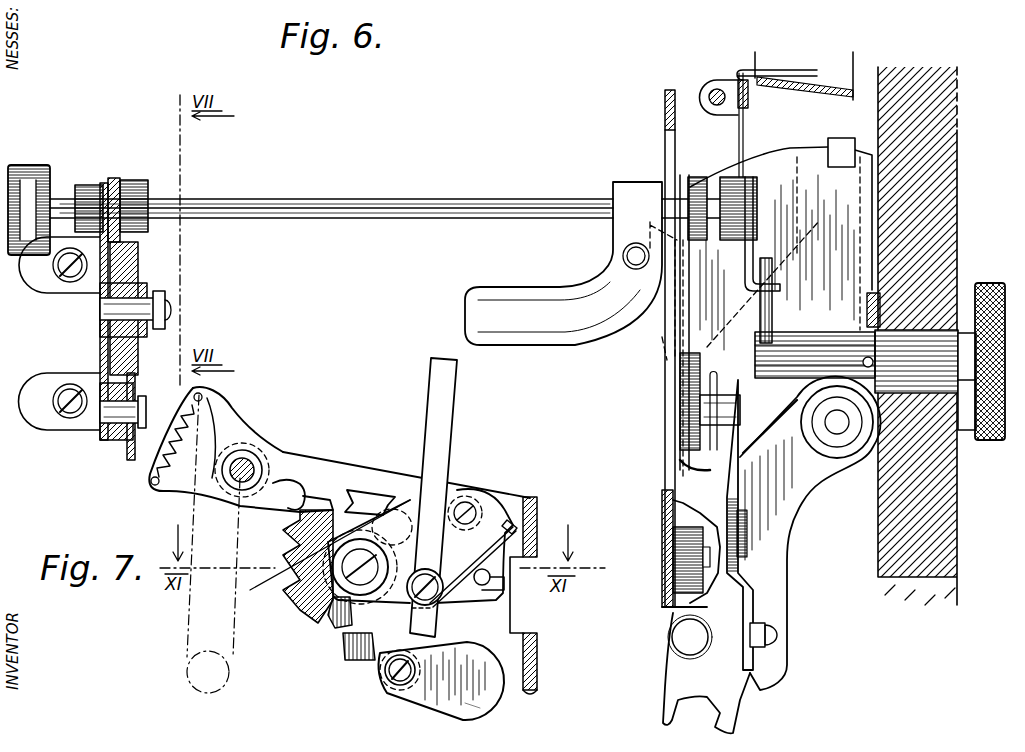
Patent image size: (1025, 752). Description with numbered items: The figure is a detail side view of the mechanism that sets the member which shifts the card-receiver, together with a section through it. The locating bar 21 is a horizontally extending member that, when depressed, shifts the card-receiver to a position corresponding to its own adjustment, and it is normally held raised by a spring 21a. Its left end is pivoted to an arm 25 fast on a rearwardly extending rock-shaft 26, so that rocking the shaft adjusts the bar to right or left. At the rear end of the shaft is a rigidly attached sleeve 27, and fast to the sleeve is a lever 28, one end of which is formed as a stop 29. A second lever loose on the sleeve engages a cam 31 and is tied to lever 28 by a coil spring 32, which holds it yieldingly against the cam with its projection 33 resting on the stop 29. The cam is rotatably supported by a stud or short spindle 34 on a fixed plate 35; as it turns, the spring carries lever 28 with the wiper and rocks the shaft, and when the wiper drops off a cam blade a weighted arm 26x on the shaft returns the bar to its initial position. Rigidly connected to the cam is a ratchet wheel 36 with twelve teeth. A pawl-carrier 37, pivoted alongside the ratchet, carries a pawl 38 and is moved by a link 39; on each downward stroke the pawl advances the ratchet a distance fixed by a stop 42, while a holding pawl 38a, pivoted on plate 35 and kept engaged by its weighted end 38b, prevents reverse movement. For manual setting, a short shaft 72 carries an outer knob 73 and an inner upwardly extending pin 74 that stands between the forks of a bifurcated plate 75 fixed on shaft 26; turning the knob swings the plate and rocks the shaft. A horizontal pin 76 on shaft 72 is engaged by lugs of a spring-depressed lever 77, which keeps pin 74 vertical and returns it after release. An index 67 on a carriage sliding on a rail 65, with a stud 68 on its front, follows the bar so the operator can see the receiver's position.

In FIG. 6, the weighted arm 26x is at (37, 168).
In FIG. 6, the rock-shaft 26 is at (400, 199).
In FIG. 6, the lever 28 is at (109, 180).
In FIG. 7, the lever 28 is at (245, 428).
In FIG. 6, the sleeve 27 is at (143, 186).
In FIG. 6, the ratchet wheel 36 is at (140, 263).
In FIG. 7, the ratchet wheel 36 is at (332, 628).
In FIG. 6, the stud or short spindle 34 is at (167, 309).
In FIG. 6, the fixed plate 35 is at (100, 321).
In FIG. 7, the fixed plate 35 is at (372, 482).
In FIG. 6, the arm 25 is at (690, 313).
In FIG. 7, the arm 25 is at (192, 613).
In FIG. 6, the locating bar 21 is at (700, 411).
In FIG. 6, the spring 21a is at (742, 429).
In FIG. 6, the lever 77 is at (865, 305).
In FIG. 6, the horizontally extending pin 76 is at (870, 318).
In FIG. 6, the bifurcated plate 75 is at (781, 288).
In FIG. 6, the upwardly extending pin 74 is at (773, 316).
In FIG. 6, the short shaft 72 is at (800, 357).
In FIG. 6, the manual operating knob 73 is at (990, 283).
In FIG. 6, the rail 65 is at (712, 86).
In FIG. 6, the stud 68 is at (750, 102).
In FIG. 6, the index 67 is at (790, 72).
In FIG. 7, the coil spring 32 is at (185, 441).
In FIG. 7, the projection 33 is at (303, 485).
In FIG. 7, the stop 29 is at (305, 500).
In FIG. 7, the cam 31 is at (303, 594).
In FIG. 7, the link 39 is at (452, 430).
In FIG. 7, the pawl-carrier 37 is at (462, 571).
In FIG. 7, the stop 42 is at (490, 587).
In FIG. 7, the pawl 38 is at (500, 580).
In FIG. 7, the holding pawl 38a is at (378, 665).
In FIG. 7, the weighted end 38b is at (485, 712).